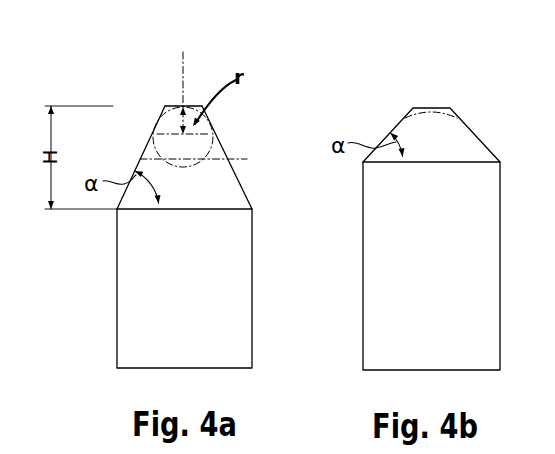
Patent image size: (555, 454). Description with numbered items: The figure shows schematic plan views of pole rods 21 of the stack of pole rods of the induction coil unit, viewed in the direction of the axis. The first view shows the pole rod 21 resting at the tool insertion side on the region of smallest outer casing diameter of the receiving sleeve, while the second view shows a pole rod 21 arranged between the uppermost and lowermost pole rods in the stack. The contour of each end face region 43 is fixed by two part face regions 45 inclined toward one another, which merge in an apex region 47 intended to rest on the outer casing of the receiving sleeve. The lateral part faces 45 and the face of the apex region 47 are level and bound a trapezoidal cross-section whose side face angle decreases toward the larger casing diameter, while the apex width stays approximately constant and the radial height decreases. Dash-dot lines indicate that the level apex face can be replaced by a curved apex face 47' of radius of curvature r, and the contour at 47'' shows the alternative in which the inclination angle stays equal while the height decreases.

In FIG. 4a, the pole rod 21 is at (137, 315).
In FIG. 4b, the pole rod 21 is at (390, 317).
In FIG. 4a, the end face region 43 is at (207, 84).
In FIG. 4b, the end face region 43 is at (447, 92).
In FIG. 4a, the part face regions 45 is at (153, 142).
In FIG. 4a, the apex region 47 is at (165, 72).
In FIG. 4a, the curved apex face 47' is at (167, 71).
In FIG. 4a, the contour of lowermost pole rod 47'' is at (230, 150).